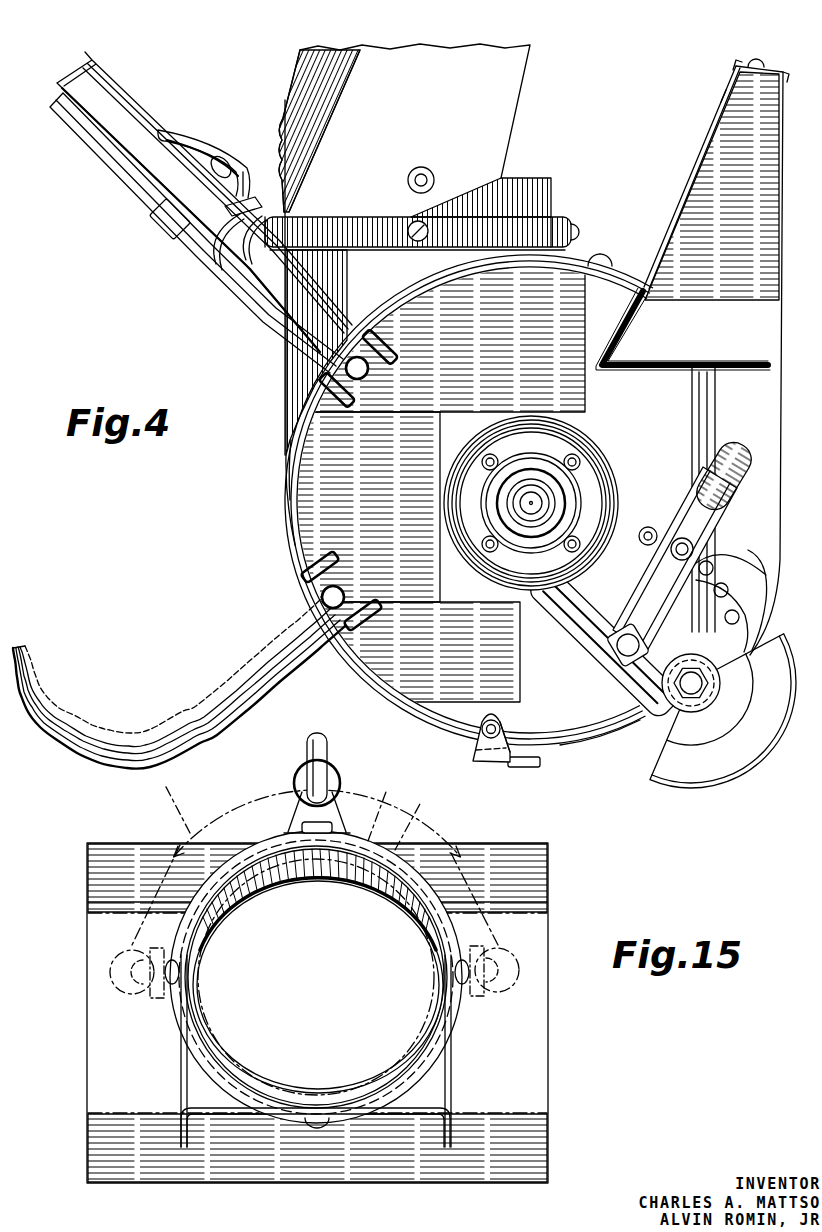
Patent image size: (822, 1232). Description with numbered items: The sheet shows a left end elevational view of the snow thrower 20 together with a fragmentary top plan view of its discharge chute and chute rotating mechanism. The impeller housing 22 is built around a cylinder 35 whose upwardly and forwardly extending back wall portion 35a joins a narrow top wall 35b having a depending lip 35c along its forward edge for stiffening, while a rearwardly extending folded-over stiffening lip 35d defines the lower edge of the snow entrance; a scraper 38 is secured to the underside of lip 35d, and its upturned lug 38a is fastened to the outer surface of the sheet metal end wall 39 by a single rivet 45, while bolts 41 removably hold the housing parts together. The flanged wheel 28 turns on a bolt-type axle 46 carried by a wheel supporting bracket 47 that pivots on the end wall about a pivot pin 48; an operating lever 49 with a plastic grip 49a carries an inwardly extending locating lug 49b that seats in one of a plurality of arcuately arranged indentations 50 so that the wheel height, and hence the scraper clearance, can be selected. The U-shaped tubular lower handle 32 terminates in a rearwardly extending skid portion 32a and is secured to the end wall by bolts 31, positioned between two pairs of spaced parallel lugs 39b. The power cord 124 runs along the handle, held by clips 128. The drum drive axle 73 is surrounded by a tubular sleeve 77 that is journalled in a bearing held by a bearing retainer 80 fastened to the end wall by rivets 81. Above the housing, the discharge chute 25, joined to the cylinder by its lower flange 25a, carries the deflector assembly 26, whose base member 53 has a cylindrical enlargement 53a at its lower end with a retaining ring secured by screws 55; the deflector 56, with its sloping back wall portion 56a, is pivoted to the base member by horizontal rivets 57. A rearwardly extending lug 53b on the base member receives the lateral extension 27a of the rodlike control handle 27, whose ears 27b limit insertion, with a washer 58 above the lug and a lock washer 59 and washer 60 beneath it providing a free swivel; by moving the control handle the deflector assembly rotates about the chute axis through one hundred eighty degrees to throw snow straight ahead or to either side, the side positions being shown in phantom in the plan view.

In FIG. 4, the snow thrower 20 is at (622, 797).
In FIG. 4, the impeller housing 22 is at (279, 546).
In FIG. 15, the impeller housing 22 is at (80, 903).
In FIG. 4, the discharge chute 25 is at (277, 348).
In FIG. 15, the discharge chute 25 is at (441, 840).
In FIG. 4, the lower flange 25a is at (287, 495).
In FIG. 4, the deflector assembly 26 is at (302, 52).
In FIG. 15, the deflector assembly 26 is at (463, 1085).
In FIG. 4, the control handle 27 is at (181, 132).
In FIG. 15, the control handle 27 is at (310, 738).
In FIG. 4, the lateral extension 27a is at (221, 156).
In FIG. 4, the ears 27b is at (246, 170).
In FIG. 4, the flanged-type wheel 28 is at (712, 778).
In FIG. 4, the bolts 31 is at (352, 358).
In FIG. 4, the lower handle 32 is at (97, 78).
In FIG. 4, the skid portions 32a is at (22, 654).
In FIG. 4, the cylindrical portion 35 is at (646, 282).
In FIG. 15, the cylindrical portion 35 is at (96, 843).
In FIG. 4, the back wall portion 35a is at (721, 100).
In FIG. 4, the top wall 35b is at (742, 64).
In FIG. 4, the depending lip 35c is at (786, 70).
In FIG. 4, the stiffening lip 35d is at (541, 765).
In FIG. 4, the scraper 38 is at (500, 766).
In FIG. 4, the upturned lug 38a is at (509, 736).
In FIG. 4, the end wall 39 is at (420, 708).
In FIG. 4, the projections or lugs 39b is at (378, 330).
In FIG. 4, the bolts 41 is at (602, 258).
In FIG. 4, the rivet 45 is at (491, 718).
In FIG. 4, the bolt-type axle 46 is at (688, 702).
In FIG. 4, the wheel supporting bracket 47 is at (600, 630).
In FIG. 4, the pivot pin 48 is at (623, 650).
In FIG. 4, the operating arm or lever 49 is at (708, 524).
In FIG. 4, the plastic grip 49a is at (736, 448).
In FIG. 4, the locating lug 49b is at (693, 551).
In FIG. 4, the indentations 50 is at (755, 560).
In FIG. 4, the base member 53 is at (511, 178).
In FIG. 4, the cylindrical enlargement 53a is at (556, 216).
In FIG. 15, the cylindrical enlargement 53a is at (386, 844).
In FIG. 4, the actuating arm or lug 53b is at (290, 207).
In FIG. 15, the actuating arm or lug 53b is at (341, 815).
In FIG. 4, the screws 55 is at (408, 231).
In FIG. 15, the screws 55 is at (312, 1130).
In FIG. 4, the deflector 56 is at (530, 58).
In FIG. 15, the deflector 56 is at (181, 1150).
In FIG. 15, the sloping back wall portion 56a is at (236, 1116).
In FIG. 4, the rivets 57 is at (421, 168).
In FIG. 15, the rivets 57 is at (171, 988).
In FIG. 4, the washer 58 is at (256, 203).
In FIG. 15, the washer 58 is at (296, 776).
In FIG. 4, the lock washer 59 is at (238, 266).
In FIG. 4, the washer 60 is at (220, 258).
In FIG. 4, the drum drive axle 73 is at (526, 504).
In FIG. 4, the tubular sleeve 77 is at (546, 503).
In FIG. 4, the bearing retainer 80 is at (526, 442).
In FIG. 4, the rivets 81 is at (488, 455).
In FIG. 4, the power cord 124 is at (94, 152).
In FIG. 4, the clips 128 is at (160, 222).